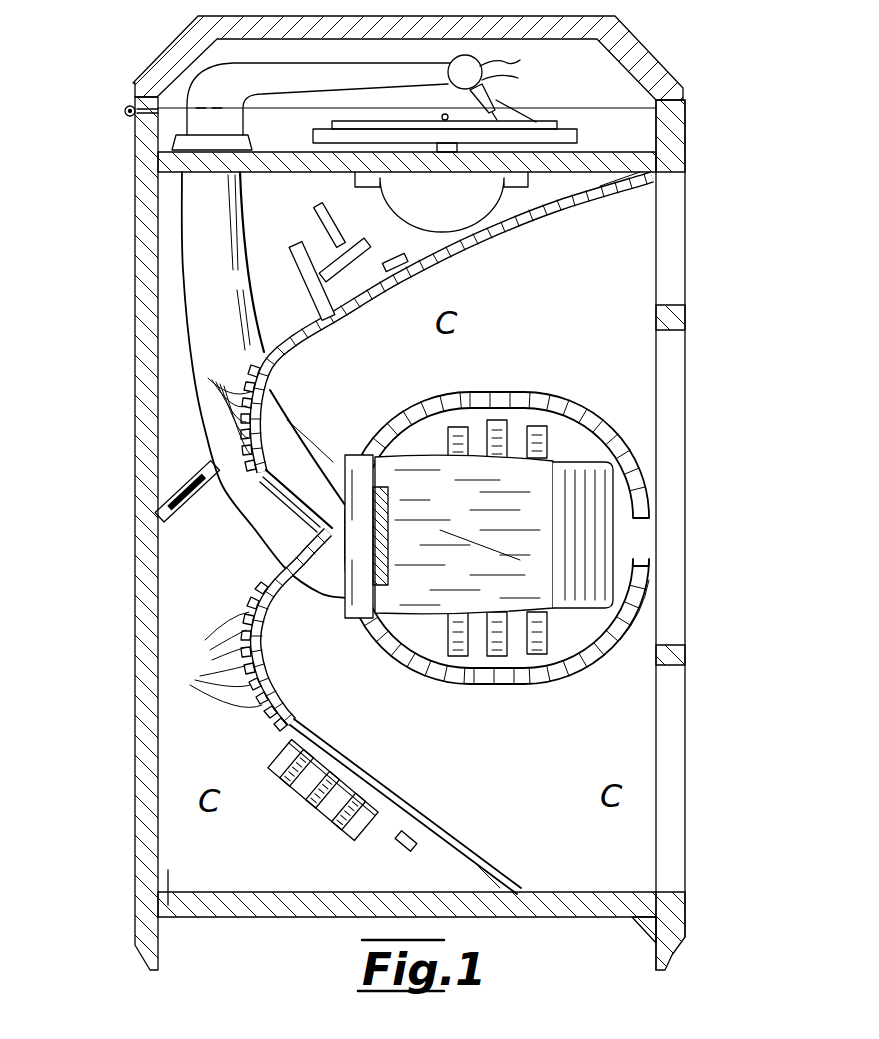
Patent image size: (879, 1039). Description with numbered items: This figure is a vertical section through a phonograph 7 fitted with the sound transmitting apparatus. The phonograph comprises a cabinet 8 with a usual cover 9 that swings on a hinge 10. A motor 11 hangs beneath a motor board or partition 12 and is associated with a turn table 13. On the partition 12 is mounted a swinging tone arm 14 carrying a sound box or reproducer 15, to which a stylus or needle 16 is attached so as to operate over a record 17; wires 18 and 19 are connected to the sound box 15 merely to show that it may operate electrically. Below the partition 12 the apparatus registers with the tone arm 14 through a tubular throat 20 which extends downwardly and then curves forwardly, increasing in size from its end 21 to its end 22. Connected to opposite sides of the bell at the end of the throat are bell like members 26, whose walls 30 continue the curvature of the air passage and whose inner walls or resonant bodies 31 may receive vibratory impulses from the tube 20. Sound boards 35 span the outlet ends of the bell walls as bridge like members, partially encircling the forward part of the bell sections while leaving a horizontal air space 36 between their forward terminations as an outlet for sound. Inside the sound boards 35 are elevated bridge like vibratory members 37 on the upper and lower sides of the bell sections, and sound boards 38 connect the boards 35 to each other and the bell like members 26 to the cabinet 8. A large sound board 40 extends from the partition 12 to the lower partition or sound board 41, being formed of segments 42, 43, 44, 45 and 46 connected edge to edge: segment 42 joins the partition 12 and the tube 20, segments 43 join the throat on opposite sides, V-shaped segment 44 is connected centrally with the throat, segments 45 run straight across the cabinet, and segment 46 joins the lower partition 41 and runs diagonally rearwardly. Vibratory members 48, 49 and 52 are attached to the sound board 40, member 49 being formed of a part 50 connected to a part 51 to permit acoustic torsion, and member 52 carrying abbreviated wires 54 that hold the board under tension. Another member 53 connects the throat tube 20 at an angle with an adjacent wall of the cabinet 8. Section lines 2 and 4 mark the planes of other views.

The section line 2- 2 is at (285, 387).
The section line 4- 4 is at (178, 100).
The phonograph 7 is at (679, 535).
The cabinet 8 is at (150, 740).
The cover 9 is at (667, 84).
The hinge 10 is at (128, 114).
The motor 11 is at (441, 202).
The motor board or partition 12 is at (632, 163).
The turn table 13 is at (575, 133).
The swinging tone arm 14 is at (268, 78).
The sound box or reproducer or vibratory device 15 is at (450, 62).
The stylus or needle or guide 16 is at (495, 112).
The record 17 is at (543, 120).
The wire 18 is at (520, 76).
The wire 19 is at (503, 58).
The tubular throat 20 is at (195, 302).
The end of throat 21 is at (200, 193).
The end of throat 22 is at (322, 480).
The bell like member 26 is at (448, 617).
The wall of bell like member 30 is at (400, 615).
The inner wall or resonant body 31 is at (343, 617).
The sound board 35 is at (590, 413).
The horizontal air space 36 is at (642, 548).
The elevated bridge like vibratory member 37 is at (494, 418).
The sound board 38 is at (345, 578).
The large sound board 40 is at (533, 222).
The partition or sound board 41 is at (565, 898).
The segment 42 is at (604, 190).
The segment or sound board 43 is at (248, 378).
The segment 44 is at (278, 567).
The segment 45 is at (228, 656).
The segment 46 is at (478, 866).
The vibratory member 48 is at (407, 243).
The vibratory member 49 is at (318, 288).
The part of vibratory member 50 is at (316, 212).
The part of vibratory member 51 is at (318, 244).
The vibratory member 52 is at (312, 797).
The member 53 is at (205, 488).
The abbreviated wires 54 is at (337, 786).